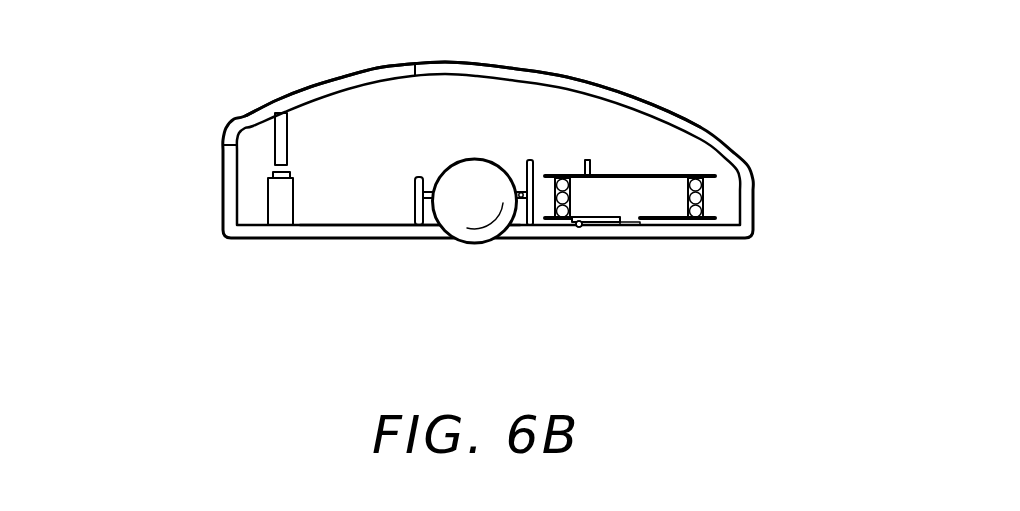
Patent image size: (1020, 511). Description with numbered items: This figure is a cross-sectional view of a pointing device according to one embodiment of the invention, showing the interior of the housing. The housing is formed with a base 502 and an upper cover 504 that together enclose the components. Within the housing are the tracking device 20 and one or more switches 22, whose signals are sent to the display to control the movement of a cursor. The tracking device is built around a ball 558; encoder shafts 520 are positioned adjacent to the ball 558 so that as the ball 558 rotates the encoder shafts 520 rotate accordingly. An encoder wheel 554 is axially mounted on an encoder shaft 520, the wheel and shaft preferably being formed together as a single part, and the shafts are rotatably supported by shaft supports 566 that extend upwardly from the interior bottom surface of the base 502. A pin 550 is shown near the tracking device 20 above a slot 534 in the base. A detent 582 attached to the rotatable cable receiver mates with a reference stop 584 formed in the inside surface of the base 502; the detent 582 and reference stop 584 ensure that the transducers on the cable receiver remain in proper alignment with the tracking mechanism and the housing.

The tracking device 20 is at (668, 185).
The switches 22 is at (280, 215).
The base 502 is at (700, 242).
The housing cover 504 is at (570, 73).
The encoder shaft 520 is at (427, 213).
The slot 534 is at (650, 225).
The pin 550 is at (586, 163).
The encoder wheel 554 is at (530, 218).
The ball 558 is at (473, 183).
The shaft supports 566 is at (400, 213).
The detent 582 is at (581, 221).
The reference stop 584 is at (580, 227).